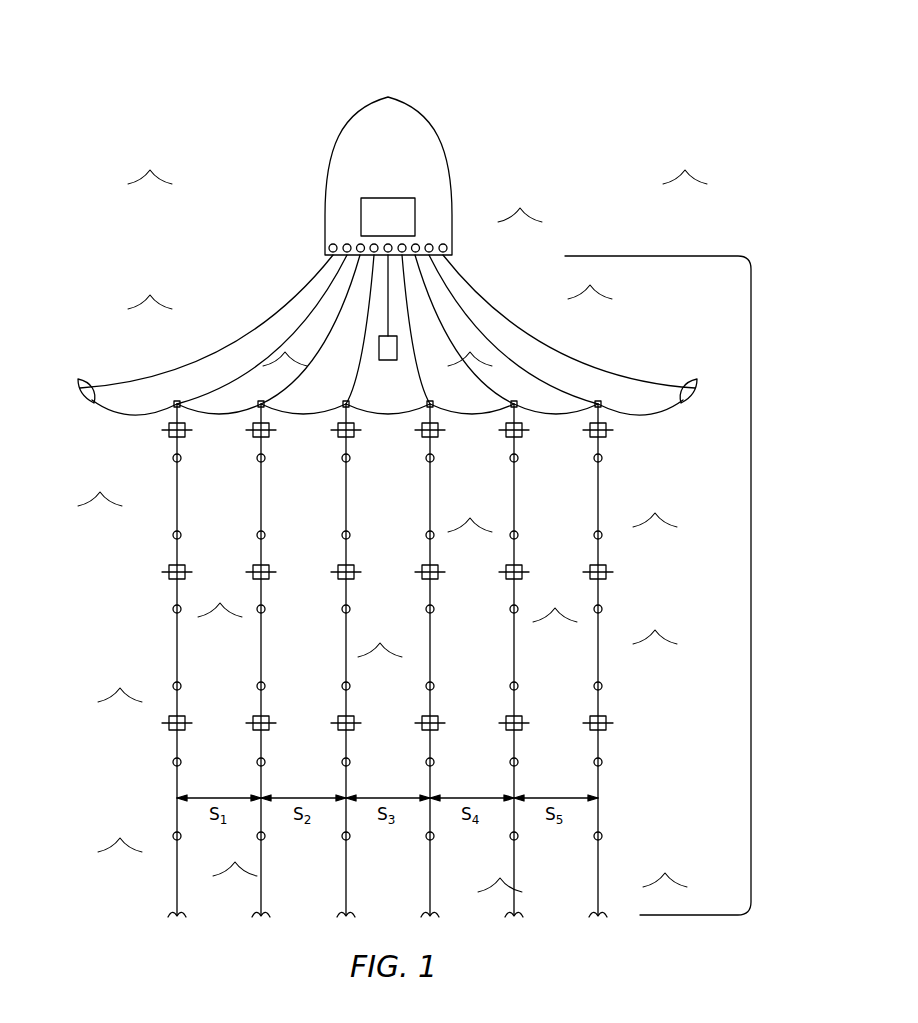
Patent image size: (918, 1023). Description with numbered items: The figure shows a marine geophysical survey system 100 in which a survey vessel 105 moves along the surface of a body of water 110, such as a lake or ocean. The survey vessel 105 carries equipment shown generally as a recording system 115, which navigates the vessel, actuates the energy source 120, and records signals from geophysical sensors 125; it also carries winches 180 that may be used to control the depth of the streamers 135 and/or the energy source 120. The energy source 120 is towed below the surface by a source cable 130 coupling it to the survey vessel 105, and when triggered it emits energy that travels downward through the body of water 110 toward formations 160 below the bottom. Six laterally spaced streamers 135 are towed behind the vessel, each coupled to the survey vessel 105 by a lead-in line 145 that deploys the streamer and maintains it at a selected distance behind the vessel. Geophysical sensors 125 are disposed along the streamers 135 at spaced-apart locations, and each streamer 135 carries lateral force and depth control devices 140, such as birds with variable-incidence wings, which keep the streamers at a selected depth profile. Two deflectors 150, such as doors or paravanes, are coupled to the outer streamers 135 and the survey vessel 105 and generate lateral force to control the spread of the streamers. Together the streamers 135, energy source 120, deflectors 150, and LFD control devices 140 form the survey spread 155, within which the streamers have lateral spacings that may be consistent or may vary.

The marine geophysical survey system 100 is at (570, 202).
The survey vessel 105 is at (341, 136).
The body of water 110 is at (167, 246).
The recording system 115 is at (392, 198).
The energy source 120 is at (385, 361).
The geophysical sensors 125 is at (259, 533).
The source cable 130 is at (389, 292).
The streamers 135 is at (175, 625).
The lateral force and depth control devices 140 is at (168, 432).
The lead-in lines 145 is at (288, 322).
The deflectors 150 is at (84, 378).
The survey spread 155 is at (752, 587).
The formations 160 is at (588, 360).
The winches 180 is at (330, 246).